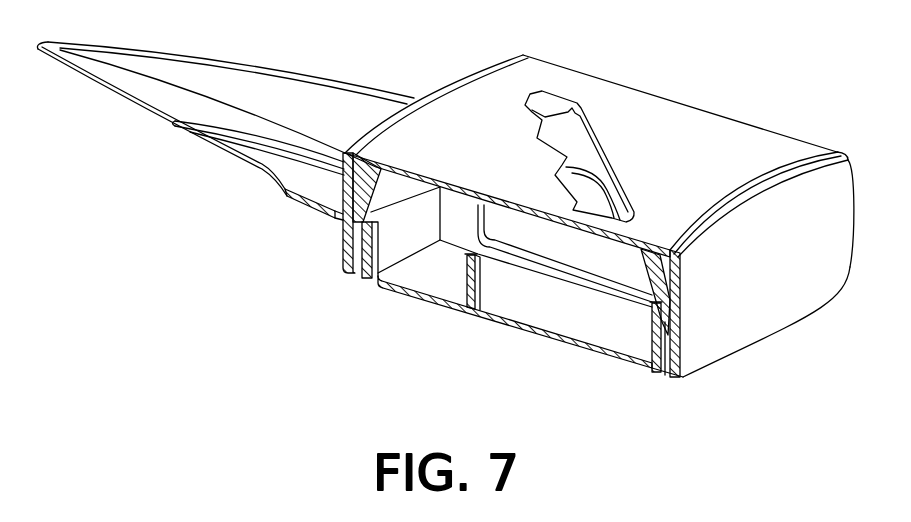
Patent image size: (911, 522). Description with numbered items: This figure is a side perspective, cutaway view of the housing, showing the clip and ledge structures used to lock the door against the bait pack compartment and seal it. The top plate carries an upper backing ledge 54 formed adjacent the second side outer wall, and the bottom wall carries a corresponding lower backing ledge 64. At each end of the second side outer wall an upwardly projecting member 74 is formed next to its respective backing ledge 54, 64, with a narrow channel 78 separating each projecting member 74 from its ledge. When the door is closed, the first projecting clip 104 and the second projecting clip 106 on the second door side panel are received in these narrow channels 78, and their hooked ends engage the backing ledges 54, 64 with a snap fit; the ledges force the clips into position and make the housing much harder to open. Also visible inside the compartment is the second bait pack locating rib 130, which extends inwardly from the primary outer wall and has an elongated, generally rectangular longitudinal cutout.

The upper backing ledge 54 is at (680, 305).
The lower backing ledge 64 is at (353, 213).
The upwardly projecting member 74 is at (378, 260).
The narrow channel 78 is at (357, 265).
The first projecting clip 104 is at (676, 338).
The second projecting clip 106 is at (353, 214).
The second bait pack locating rib 130 is at (460, 231).